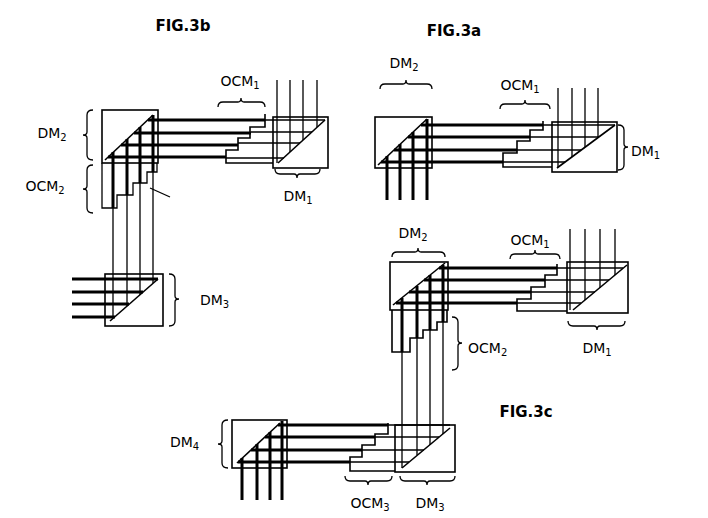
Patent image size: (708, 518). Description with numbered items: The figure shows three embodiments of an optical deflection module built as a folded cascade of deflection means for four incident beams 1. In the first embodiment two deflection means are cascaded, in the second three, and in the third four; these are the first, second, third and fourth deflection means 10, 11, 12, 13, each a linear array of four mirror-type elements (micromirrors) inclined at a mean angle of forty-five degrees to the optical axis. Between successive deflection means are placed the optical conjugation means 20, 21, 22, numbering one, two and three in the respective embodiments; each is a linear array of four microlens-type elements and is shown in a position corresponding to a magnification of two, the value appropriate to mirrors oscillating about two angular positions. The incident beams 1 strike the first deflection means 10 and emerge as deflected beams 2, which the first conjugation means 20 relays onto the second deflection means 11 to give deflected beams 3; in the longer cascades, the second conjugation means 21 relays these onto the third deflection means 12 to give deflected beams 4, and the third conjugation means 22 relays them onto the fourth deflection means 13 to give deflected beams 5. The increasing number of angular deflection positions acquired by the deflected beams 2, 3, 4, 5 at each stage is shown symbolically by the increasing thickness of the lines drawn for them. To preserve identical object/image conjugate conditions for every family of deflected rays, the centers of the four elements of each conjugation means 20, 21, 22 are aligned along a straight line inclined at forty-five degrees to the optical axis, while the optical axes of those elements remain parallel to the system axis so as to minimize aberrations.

In FIG. 3B, the incident beams 1 is at (295, 90).
In FIG. 3C, the incident beams 1 is at (593, 252).
In FIG. 3B, the deflected beams 2 is at (180, 137).
In FIG. 3A, the deflected beams 2 is at (470, 145).
In FIG. 3C, the deflected beams 2 is at (466, 289).
In FIG. 3B, the deflected beams 3 is at (133, 238).
In FIG. 3A, the deflected beams 3 is at (422, 190).
In FIG. 3C, the deflected beams 3 is at (409, 389).
In FIG. 3B, the deflected beams 4 is at (88, 324).
In FIG. 3C, the deflected beams 4 is at (312, 447).
In FIG. 3C, the deflected beams 5 is at (282, 490).
In FIG. 3B, the first deflection means 10 is at (315, 120).
In FIG. 3A, the first deflection means 10 is at (592, 160).
In FIG. 3C, the first deflection means 10 is at (603, 287).
In FIG. 3B, the second deflection means 11 is at (135, 127).
In FIG. 3A, the second deflection means 11 is at (412, 123).
In FIG. 3C, the second deflection means 11 is at (405, 283).
In FIG. 3B, the third deflection means 12 is at (130, 309).
In FIG. 3C, the third deflection means 12 is at (436, 449).
In FIG. 3C, the fourth deflection means 13 is at (252, 442).
In FIG. 3B, the first optical conjugation means 20 is at (238, 165).
In FIG. 3A, the first optical conjugation means 20 is at (505, 168).
In FIG. 3C, the first optical conjugation means 20 is at (558, 308).
In FIG. 3C, the second optical conjugation means 21 is at (392, 351).
In FIG. 3C, the third optical conjugation means 22 is at (370, 426).